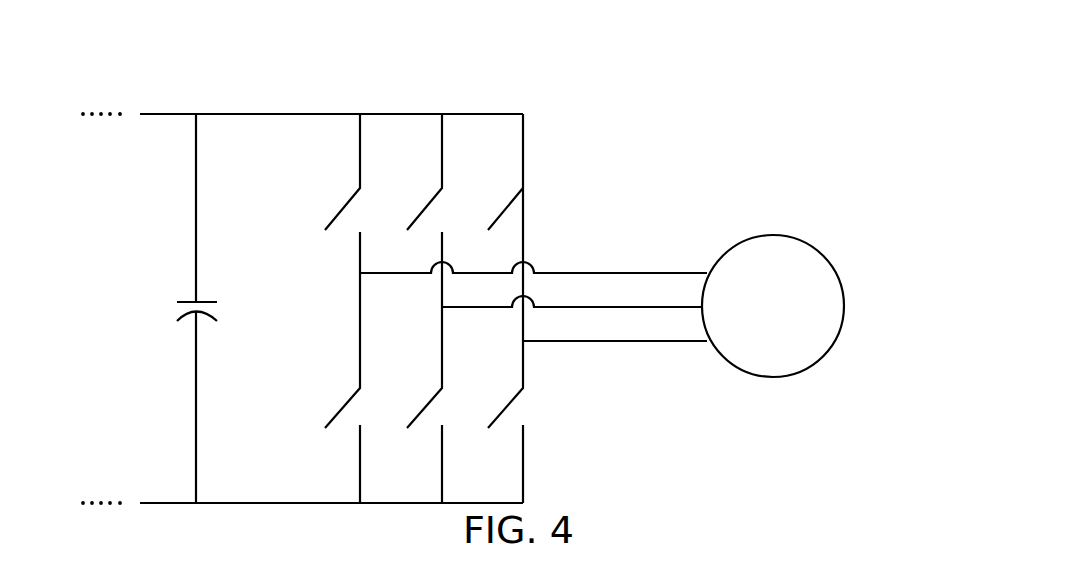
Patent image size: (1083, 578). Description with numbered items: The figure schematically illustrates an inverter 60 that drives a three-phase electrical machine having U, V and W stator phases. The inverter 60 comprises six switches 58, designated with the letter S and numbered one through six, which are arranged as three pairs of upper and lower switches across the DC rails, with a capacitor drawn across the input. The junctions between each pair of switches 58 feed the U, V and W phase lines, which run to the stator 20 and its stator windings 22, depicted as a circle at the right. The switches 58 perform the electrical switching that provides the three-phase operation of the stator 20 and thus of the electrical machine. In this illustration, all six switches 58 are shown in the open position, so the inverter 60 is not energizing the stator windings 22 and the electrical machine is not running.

The stator 20 is at (809, 252).
The stator windings 22 is at (815, 242).
The switches 58 is at (572, 183).
The inverter 60 is at (410, 277).